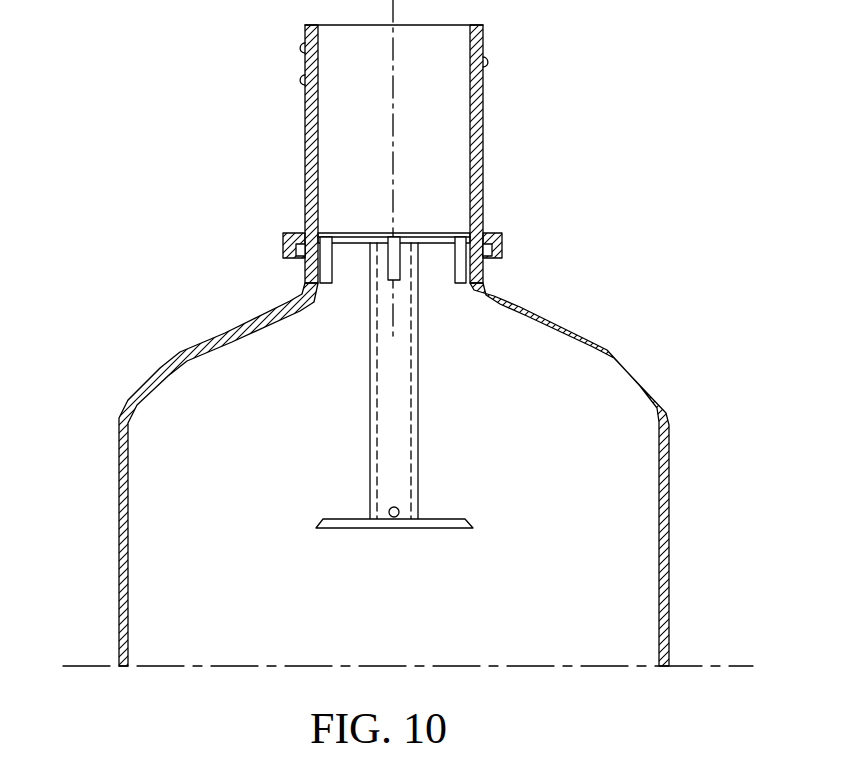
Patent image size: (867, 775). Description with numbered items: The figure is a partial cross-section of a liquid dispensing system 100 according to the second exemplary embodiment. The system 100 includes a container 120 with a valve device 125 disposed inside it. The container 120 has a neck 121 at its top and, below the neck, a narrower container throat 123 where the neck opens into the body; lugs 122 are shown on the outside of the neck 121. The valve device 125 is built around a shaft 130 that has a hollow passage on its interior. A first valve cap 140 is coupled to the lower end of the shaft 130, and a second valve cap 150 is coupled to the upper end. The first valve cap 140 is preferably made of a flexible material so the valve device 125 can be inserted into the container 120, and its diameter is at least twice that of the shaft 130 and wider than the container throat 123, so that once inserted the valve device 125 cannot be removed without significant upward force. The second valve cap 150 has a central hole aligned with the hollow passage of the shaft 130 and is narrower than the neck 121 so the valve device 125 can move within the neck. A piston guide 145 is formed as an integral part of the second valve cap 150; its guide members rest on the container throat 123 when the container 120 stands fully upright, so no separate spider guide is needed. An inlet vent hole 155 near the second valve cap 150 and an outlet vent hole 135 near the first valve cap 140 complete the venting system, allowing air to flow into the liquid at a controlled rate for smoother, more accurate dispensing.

The liquid dispensing system 100 is at (426, 362).
The container 120 is at (426, 474).
The container neck 121 is at (383, 154).
The thread lugs 122 is at (301, 48).
The container throat 123 is at (324, 290).
The valve device 125 is at (541, 381).
The shaft 130 is at (419, 462).
The outlet vent hole 135 is at (400, 511).
The first valve cap 140 is at (444, 528).
The piston guide 145 is at (431, 236).
The second valve cap 150 is at (408, 212).
The inlet vent hole 155 is at (398, 230).